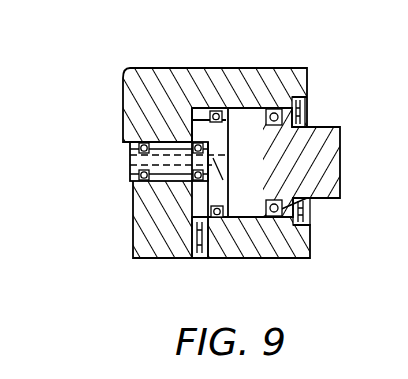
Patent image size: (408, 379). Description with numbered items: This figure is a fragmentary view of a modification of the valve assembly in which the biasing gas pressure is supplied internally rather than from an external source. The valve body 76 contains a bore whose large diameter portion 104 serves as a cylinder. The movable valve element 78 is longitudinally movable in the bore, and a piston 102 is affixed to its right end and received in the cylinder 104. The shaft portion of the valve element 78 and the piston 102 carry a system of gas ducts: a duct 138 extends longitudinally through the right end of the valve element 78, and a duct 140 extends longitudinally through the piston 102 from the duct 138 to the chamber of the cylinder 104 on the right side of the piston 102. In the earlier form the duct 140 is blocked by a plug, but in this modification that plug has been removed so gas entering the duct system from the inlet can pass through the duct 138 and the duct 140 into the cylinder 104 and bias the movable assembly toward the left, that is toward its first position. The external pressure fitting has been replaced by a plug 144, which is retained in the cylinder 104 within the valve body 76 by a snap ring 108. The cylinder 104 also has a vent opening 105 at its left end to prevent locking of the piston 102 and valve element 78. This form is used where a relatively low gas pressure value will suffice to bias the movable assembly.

The valve body 76 is at (260, 68).
The valve element 78 is at (130, 150).
The piston 102 is at (197, 108).
The large diameter portion of the bore (cylinder) 104 is at (270, 258).
The vent opening 105 is at (198, 258).
The snap ring 108 is at (309, 96).
The duct 138 is at (163, 167).
The duct 140 is at (223, 180).
The plug 144 is at (321, 127).